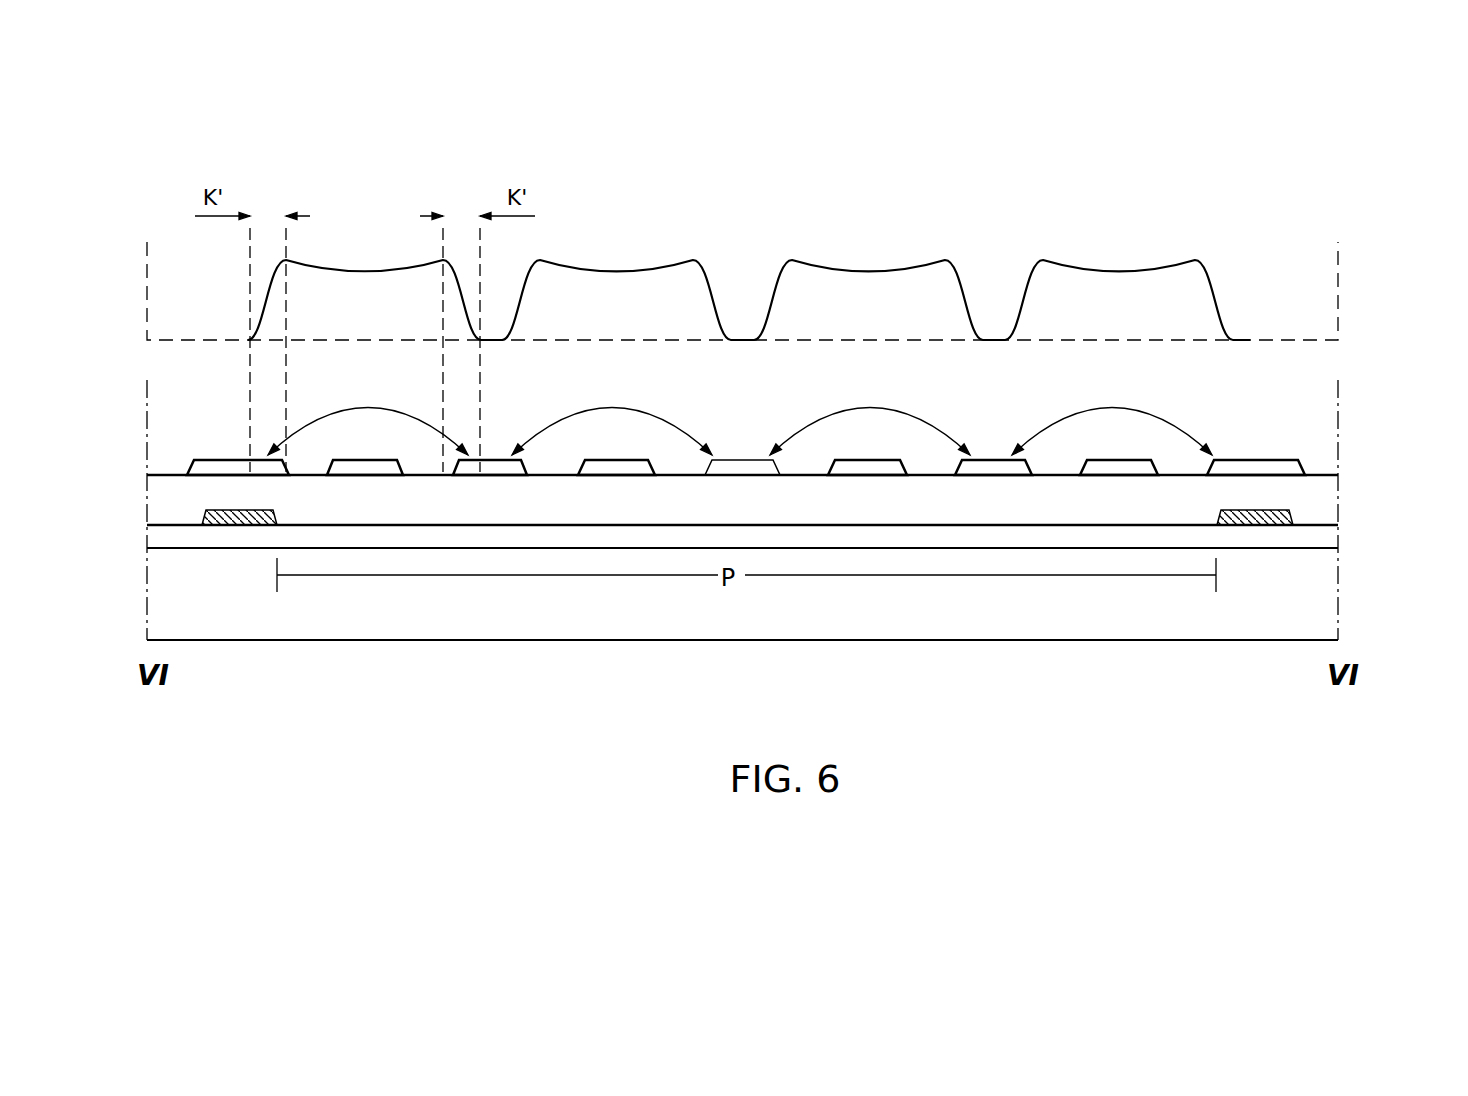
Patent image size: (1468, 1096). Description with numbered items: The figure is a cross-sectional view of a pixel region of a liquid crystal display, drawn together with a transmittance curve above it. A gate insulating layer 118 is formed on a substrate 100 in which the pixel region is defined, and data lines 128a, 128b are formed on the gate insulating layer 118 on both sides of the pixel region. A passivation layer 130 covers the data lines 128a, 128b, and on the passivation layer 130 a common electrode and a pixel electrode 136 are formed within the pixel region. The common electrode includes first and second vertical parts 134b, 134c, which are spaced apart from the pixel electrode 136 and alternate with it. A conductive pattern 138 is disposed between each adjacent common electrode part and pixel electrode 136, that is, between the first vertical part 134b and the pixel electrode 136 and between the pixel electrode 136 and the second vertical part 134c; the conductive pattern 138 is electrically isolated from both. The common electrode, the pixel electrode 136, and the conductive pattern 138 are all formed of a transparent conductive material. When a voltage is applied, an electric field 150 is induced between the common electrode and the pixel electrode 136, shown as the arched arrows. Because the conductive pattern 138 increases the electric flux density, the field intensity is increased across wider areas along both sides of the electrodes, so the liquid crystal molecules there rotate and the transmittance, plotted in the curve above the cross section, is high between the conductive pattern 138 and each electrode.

The substrate 100 is at (1258, 611).
The gate insulating layer 118 is at (1182, 535).
The data line 128a is at (233, 525).
The data line 128b is at (1247, 523).
The passivation layer 130 is at (1327, 498).
The first vertical part of the common electrode 134b is at (197, 472).
The second vertical part of the common electrode 134c is at (765, 467).
The pixel electrode 136 is at (488, 467).
The conductive pattern 138 is at (370, 467).
The electric field 150 is at (1050, 422).